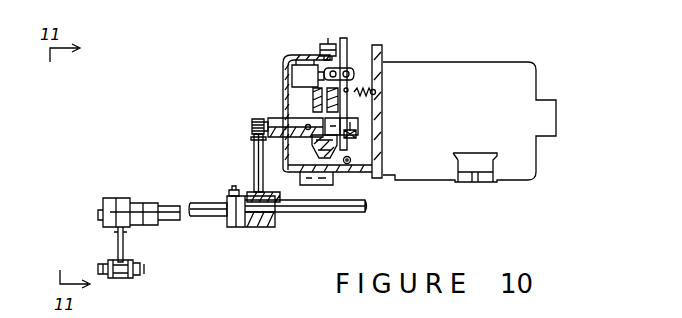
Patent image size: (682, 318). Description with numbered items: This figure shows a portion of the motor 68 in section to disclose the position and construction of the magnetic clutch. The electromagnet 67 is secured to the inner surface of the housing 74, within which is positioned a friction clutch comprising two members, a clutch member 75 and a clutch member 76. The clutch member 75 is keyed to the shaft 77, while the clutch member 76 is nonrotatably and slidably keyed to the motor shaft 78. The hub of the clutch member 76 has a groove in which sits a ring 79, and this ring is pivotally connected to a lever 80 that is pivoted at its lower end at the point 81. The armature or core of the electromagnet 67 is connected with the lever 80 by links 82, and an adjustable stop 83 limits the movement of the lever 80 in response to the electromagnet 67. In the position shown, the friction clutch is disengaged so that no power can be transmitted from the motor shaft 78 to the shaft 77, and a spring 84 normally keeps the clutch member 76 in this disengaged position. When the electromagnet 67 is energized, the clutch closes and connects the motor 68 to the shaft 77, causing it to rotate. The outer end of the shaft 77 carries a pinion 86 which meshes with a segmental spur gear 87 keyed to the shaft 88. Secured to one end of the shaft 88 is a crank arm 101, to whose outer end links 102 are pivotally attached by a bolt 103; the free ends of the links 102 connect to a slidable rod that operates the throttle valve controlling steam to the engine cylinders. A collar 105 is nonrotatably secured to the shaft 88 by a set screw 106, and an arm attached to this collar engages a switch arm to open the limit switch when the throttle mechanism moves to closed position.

The motor 68 is at (469, 122).
The housing 74 is at (283, 82).
The electromagnet 67 is at (302, 70).
The adjustable stop 83 is at (326, 44).
The links 82 is at (345, 68).
The lever 80 is at (350, 76).
The spring 84 is at (376, 92).
The clutch member 75 is at (313, 100).
The shaft 77 is at (292, 128).
The motor shaft 78 is at (358, 120).
The ring 79 is at (356, 134).
The clutch member 76 is at (334, 150).
The pivot point 81 is at (348, 164).
The pinion 86 is at (252, 127).
The segmental spur gear 87 is at (253, 146).
The shaft 88 is at (216, 211).
The collar 105 is at (236, 224).
The set screw 106 is at (232, 190).
The crank arm 101 is at (123, 245).
The bolt 103 is at (140, 270).
The links 102 is at (128, 278).